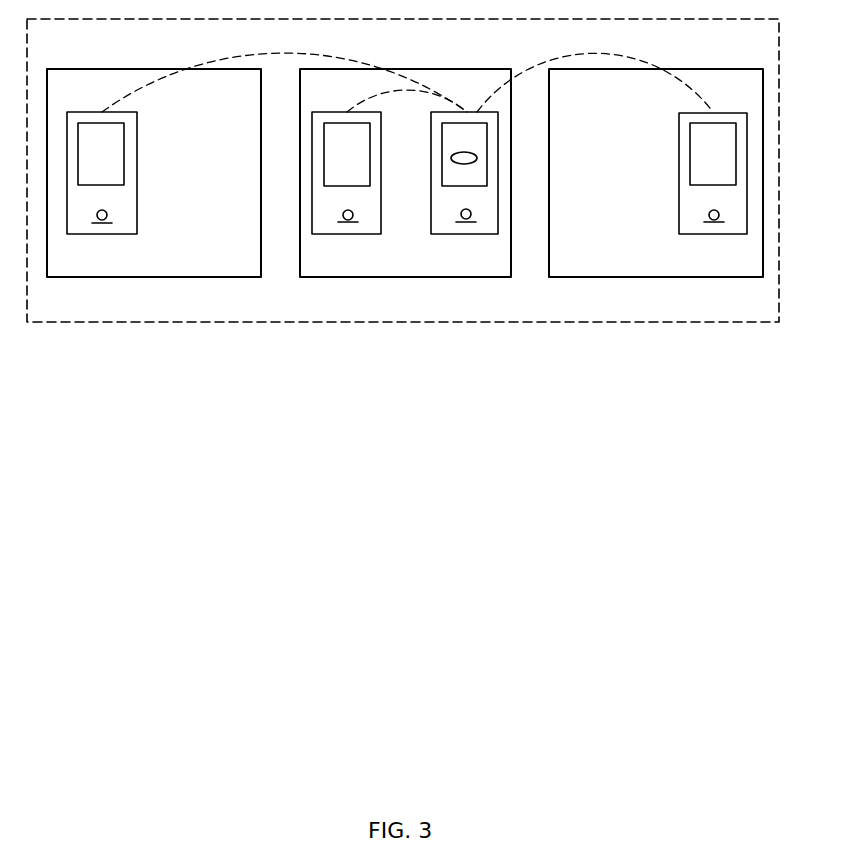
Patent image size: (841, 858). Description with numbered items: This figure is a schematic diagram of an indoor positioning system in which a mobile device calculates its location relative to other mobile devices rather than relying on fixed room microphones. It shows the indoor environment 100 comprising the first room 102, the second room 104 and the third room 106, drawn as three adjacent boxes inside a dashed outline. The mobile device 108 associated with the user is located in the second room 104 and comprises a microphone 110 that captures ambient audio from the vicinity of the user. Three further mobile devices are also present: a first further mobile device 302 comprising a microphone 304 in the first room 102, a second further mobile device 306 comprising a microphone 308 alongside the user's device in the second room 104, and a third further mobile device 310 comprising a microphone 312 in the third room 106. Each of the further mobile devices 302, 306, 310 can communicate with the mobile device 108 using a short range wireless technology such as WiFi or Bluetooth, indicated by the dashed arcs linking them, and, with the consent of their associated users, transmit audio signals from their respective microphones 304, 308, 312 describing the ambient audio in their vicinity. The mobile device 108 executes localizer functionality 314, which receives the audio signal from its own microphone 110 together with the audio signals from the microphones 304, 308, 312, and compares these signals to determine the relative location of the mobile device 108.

The indoor environment 100 is at (137, 322).
The first room 102 is at (208, 277).
The second room 104 is at (461, 277).
The third room 106 is at (695, 277).
The mobile device 108 is at (498, 123).
The microphone 110 is at (456, 214).
The first further mobile device 302 is at (137, 132).
The microphone 304 is at (107, 212).
The second further mobile device 306 is at (312, 124).
The microphone 308 is at (338, 210).
The third further mobile device 310 is at (679, 124).
The microphone 312 is at (706, 212).
The localizer functionality 314 is at (450, 157).